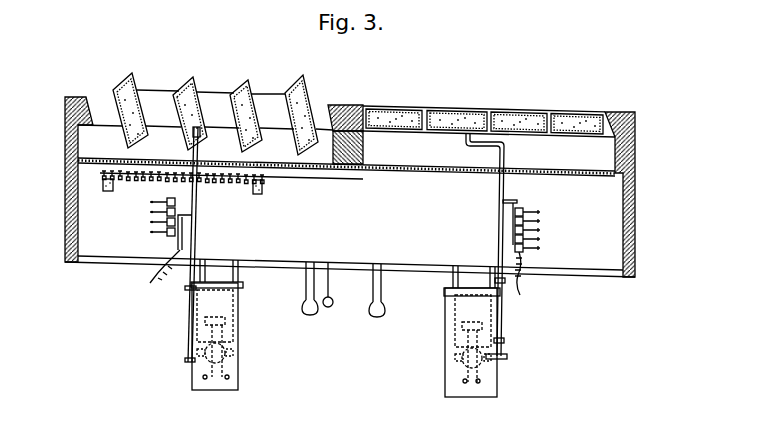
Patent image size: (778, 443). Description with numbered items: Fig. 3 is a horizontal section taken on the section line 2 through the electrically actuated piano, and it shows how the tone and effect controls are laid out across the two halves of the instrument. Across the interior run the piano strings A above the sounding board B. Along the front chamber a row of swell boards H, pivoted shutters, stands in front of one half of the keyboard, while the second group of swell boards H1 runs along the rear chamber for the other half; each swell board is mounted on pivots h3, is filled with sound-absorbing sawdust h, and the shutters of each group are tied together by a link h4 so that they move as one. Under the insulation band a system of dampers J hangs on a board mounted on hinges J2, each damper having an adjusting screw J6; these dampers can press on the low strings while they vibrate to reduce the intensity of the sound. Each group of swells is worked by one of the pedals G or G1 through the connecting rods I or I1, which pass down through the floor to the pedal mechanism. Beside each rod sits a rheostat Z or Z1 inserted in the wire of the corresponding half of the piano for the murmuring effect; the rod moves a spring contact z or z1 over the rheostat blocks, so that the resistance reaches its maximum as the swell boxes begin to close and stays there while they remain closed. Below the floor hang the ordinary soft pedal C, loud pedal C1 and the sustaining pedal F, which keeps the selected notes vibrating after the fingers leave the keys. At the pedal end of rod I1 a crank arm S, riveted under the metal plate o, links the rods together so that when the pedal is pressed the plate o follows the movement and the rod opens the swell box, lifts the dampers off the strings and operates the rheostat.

The section line 2 is at (178, 80).
The piano string A is at (335, 177).
The sounding board B is at (445, 171).
The swell board H is at (307, 85).
The sawdust h is at (236, 92).
The pivot h3 is at (261, 94).
The link h4 is at (149, 91).
The swell board H1 is at (453, 108).
The dampers J is at (263, 181).
The hinges J2 is at (105, 191).
The adjusting screw J6 is at (222, 184).
The rheostat Z is at (150, 209).
The spring contact z is at (165, 266).
The rheostat Z1 is at (541, 219).
The spring contact z1 is at (510, 201).
The connecting rod I is at (199, 242).
The connecting rod I1 is at (500, 238).
The soft pedal C is at (310, 313).
The loud pedal C1 is at (373, 317).
The sustaining pedal F is at (329, 307).
The pedal G is at (196, 351).
The pedal G1 is at (498, 353).
The metal plate o is at (225, 360).
The crank arm S is at (508, 355).